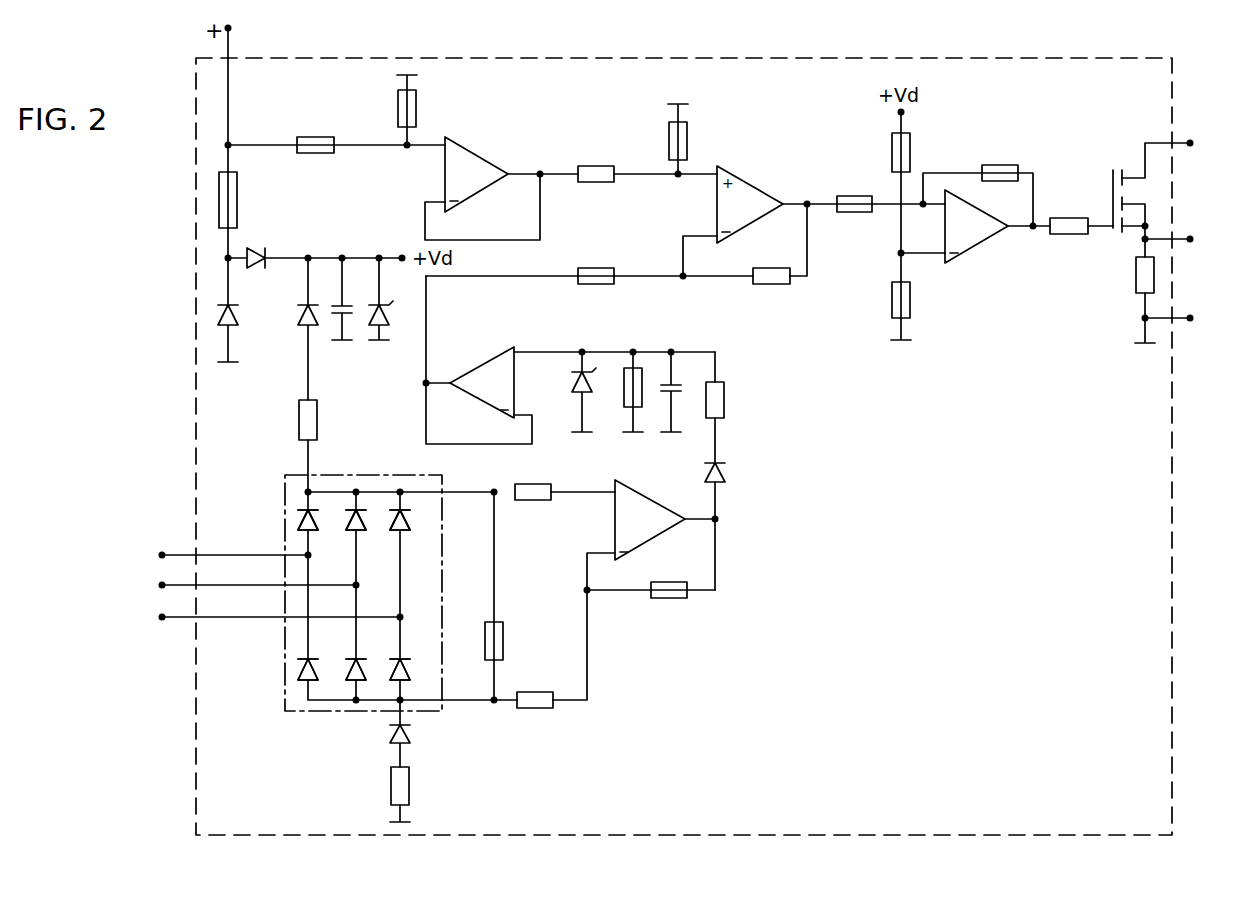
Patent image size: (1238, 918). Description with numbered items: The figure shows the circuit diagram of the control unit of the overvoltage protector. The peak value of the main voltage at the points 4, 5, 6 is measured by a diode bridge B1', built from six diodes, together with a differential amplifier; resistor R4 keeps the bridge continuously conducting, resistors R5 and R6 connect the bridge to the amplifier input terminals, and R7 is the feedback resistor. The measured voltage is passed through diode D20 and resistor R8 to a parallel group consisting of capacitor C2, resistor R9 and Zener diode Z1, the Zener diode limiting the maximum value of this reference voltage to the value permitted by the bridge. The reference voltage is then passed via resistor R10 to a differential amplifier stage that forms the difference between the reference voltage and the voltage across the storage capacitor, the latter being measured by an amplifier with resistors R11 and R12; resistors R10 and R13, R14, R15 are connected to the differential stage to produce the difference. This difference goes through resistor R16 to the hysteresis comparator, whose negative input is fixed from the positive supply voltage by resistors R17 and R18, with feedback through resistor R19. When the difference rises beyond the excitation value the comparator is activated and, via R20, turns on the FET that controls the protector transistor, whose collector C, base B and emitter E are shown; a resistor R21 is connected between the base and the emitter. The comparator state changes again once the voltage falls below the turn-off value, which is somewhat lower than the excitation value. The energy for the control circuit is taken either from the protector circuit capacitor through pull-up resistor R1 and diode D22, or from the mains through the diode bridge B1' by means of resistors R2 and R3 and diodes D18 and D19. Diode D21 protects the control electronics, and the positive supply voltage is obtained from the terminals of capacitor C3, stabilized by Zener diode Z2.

The pull-up resistor R1 is at (243, 200).
The resistor R2 is at (414, 794).
The resistor R3 is at (323, 446).
The resistor R4 is at (508, 596).
The resistor R5 is at (565, 481).
The resistor R6 is at (566, 630).
The feedback resistor R7 is at (651, 579).
The resistor R8 is at (729, 385).
The resistor R9 is at (622, 392).
The resistor R10 is at (589, 264).
The resistor R11 is at (336, 133).
The resistor R12 is at (427, 110).
The resistor R13 is at (647, 162).
The resistor R14 is at (697, 139).
The resistor R15 is at (772, 264).
The resistor R16 is at (891, 193).
The resistor R17 is at (921, 152).
The resistor R18 is at (921, 300).
The feedback resistor R19 is at (978, 184).
The resistor R20 is at (1081, 214).
The resistor R21 is at (1130, 300).
The diode D18 is at (423, 745).
The diode D19 is at (290, 329).
The diode D20 is at (737, 451).
The diode D21 is at (247, 333).
The diode D22 is at (315, 247).
The Zener diode Z1 is at (572, 392).
The Zener diode Z2 is at (393, 299).
The capacitor C2 is at (686, 392).
The capacitor C3 is at (352, 299).
The diode bridge B1' is at (401, 578).
The element FET is at (1142, 200).
The point 4 is at (225, 555).
The point 5 is at (249, 585).
The point 6 is at (271, 617).
The collector C is at (1201, 144).
The base B is at (1180, 240).
The emitter E is at (1179, 319).